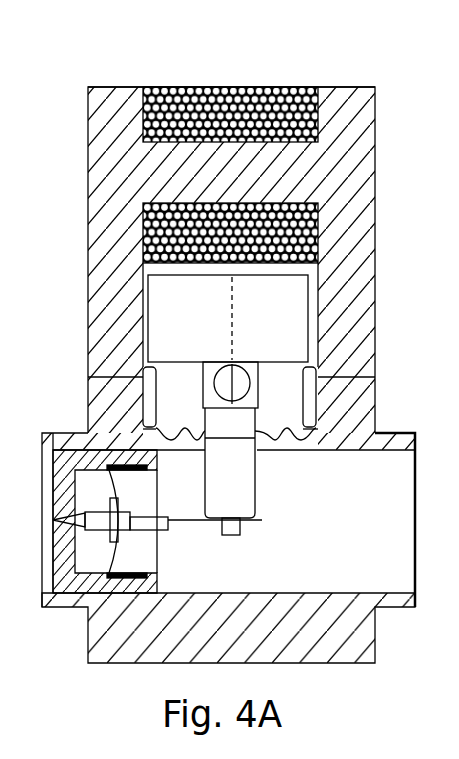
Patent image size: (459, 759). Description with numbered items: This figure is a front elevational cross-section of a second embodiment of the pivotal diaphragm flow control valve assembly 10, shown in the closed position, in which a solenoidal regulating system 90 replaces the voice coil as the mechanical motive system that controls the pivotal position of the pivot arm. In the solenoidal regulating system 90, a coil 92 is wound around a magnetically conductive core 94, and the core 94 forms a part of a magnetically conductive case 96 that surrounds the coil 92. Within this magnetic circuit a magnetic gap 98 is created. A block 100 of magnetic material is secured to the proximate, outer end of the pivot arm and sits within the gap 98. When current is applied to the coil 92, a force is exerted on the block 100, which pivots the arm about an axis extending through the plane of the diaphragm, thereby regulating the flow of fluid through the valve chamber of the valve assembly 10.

The valve assembly 10 is at (383, 420).
The solenoidal regulating system 90 is at (165, 79).
The coil 92 is at (277, 88).
The magnetically conductive core 94 is at (160, 178).
The magnetically conductive case 96 is at (100, 297).
The magnetic gap 98 is at (145, 322).
The block of magnetic material 100 is at (282, 315).